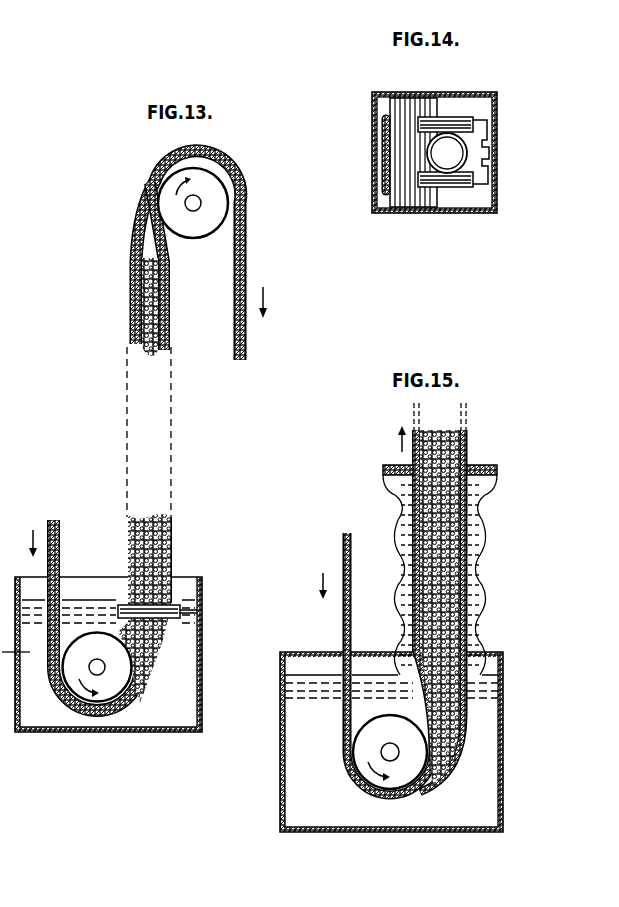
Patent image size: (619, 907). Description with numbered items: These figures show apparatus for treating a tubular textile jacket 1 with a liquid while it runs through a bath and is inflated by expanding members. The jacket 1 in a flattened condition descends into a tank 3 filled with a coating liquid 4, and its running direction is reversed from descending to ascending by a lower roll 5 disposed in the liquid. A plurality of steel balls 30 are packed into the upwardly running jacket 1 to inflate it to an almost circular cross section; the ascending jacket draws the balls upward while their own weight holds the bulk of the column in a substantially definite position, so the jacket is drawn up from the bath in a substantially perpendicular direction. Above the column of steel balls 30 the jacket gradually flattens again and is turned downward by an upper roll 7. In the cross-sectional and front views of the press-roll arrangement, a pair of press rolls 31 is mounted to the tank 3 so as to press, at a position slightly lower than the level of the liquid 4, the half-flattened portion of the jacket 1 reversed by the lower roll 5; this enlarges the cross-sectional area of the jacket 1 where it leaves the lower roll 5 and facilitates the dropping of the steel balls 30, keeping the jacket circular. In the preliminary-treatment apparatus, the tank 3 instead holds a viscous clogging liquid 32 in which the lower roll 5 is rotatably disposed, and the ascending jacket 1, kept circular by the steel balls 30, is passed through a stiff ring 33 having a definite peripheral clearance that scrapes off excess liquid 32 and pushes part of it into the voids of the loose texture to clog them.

In FIG. 13, the tubular textile jacket 1 is at (170, 315).
In FIG. 14, the tubular textile jacket 1 is at (383, 156).
In FIG. 15, the tubular textile jacket 1 is at (464, 562).
In FIG. 13, the tank 3 is at (78, 732).
In FIG. 14, the tank 3 is at (372, 107).
In FIG. 15, the tank 3 is at (327, 833).
In FIG. 14, the coating liquid 4 is at (447, 202).
In FIG. 13, the lower roll 5 is at (118, 681).
In FIG. 14, the lower roll 5 is at (398, 194).
In FIG. 15, the lower roll 5 is at (407, 767).
In FIG. 13, the upper roll 7 is at (196, 238).
In FIG. 13, the steel balls 30 is at (171, 543).
In FIG. 13, the press rolls 31 is at (173, 620).
In FIG. 14, the press rolls 31 is at (463, 120).
In FIG. 15, the clogging liquid 32 is at (478, 494).
In FIG. 15, the ring 33 is at (489, 466).